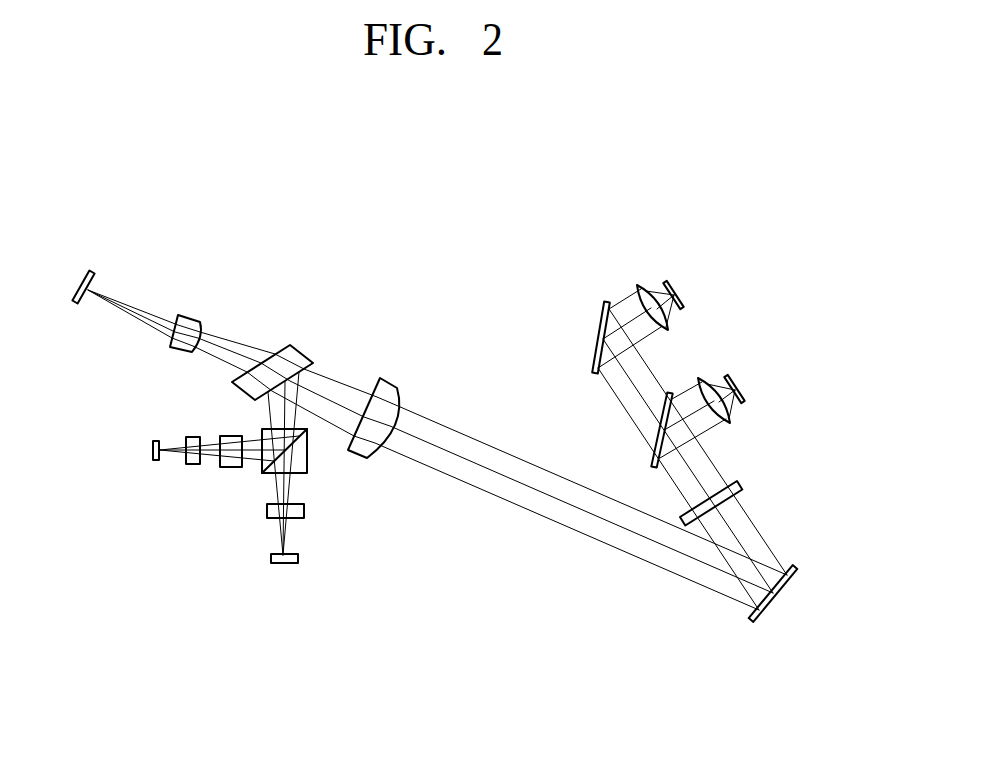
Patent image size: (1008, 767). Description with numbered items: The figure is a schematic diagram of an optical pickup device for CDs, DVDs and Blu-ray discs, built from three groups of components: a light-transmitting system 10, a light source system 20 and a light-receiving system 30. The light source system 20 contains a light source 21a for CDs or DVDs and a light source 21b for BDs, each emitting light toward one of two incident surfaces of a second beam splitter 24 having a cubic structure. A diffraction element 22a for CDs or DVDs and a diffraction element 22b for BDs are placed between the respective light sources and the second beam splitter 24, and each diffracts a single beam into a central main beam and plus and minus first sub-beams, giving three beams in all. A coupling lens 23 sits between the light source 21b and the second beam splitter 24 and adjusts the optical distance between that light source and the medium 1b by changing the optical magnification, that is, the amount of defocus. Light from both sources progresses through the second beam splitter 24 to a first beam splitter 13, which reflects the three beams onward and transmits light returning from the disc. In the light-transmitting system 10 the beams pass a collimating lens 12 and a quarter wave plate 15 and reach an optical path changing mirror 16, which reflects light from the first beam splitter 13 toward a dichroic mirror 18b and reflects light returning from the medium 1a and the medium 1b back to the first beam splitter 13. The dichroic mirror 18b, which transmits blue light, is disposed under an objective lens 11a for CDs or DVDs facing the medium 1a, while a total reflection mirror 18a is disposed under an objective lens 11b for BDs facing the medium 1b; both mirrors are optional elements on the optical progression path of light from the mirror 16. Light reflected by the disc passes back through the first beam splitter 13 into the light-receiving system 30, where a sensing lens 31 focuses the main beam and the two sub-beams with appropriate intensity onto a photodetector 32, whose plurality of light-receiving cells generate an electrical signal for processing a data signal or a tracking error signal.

The light-transmitting system 10 is at (672, 208).
The objective lens for CDs or DVDs 11a is at (730, 419).
The objective lens for BDs 11b is at (640, 287).
The medium 1a is at (753, 376).
The medium 1b is at (675, 293).
The collimating lens 12 is at (390, 387).
The first beam splitter 13 is at (293, 352).
The quarter wave plate 15 is at (743, 488).
The optical path changing mirror 16 is at (795, 567).
The total reflection mirror 18a is at (600, 338).
The dichroic mirror 18b is at (652, 466).
The light source system 20 is at (317, 585).
The light source for CDs or DVDs 21a is at (298, 558).
The light source for BDs 21b is at (153, 462).
The diffraction element for CDs or DVDs 22a is at (304, 511).
The diffraction element for BDs 22b is at (194, 465).
The coupling lens 23 is at (237, 467).
The second beam splitter 24 is at (262, 430).
The light-receiving system 30 is at (145, 276).
The sensing lens 31 is at (193, 314).
The photodetector 32 is at (92, 270).